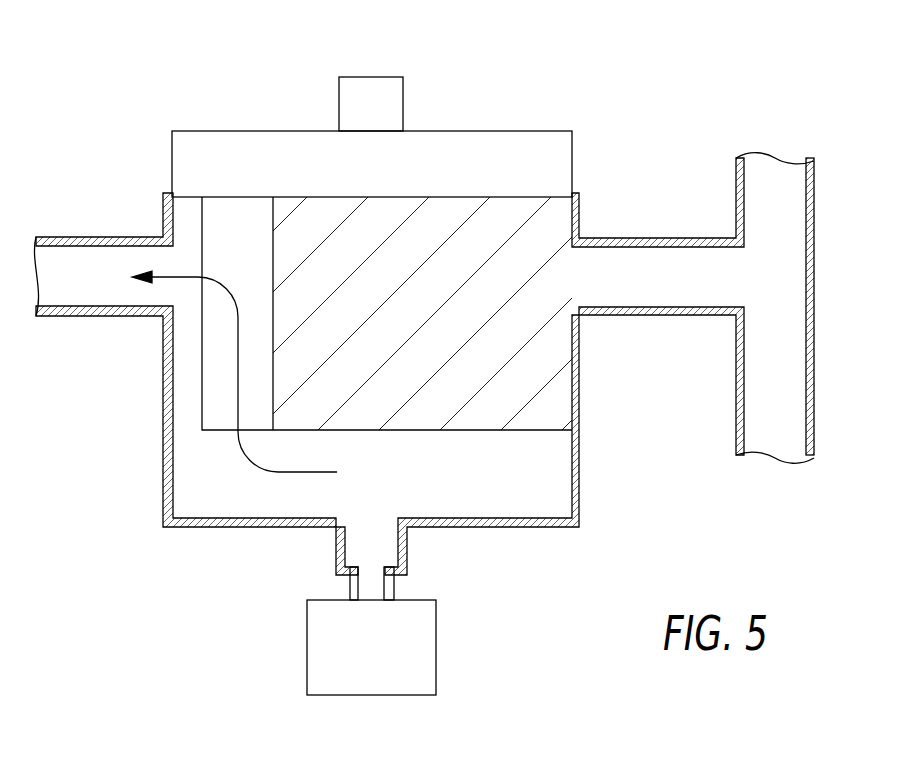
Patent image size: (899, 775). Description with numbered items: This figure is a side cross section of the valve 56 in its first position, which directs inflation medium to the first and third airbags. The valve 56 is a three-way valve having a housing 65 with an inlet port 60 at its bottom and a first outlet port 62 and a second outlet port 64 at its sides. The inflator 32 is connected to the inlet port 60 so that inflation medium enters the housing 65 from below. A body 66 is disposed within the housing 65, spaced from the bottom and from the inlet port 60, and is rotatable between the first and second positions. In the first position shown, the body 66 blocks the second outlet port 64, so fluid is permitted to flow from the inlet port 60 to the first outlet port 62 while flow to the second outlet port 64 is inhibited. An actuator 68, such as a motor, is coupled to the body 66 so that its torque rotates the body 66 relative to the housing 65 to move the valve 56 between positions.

The inflator 32 is at (307, 618).
The valve 56 is at (620, 380).
The inlet port 60 is at (407, 545).
The first outlet port 62 is at (108, 285).
The second outlet port 64 is at (657, 285).
The housing 65 is at (580, 418).
The body 66 is at (510, 227).
The actuator 68 is at (360, 77).